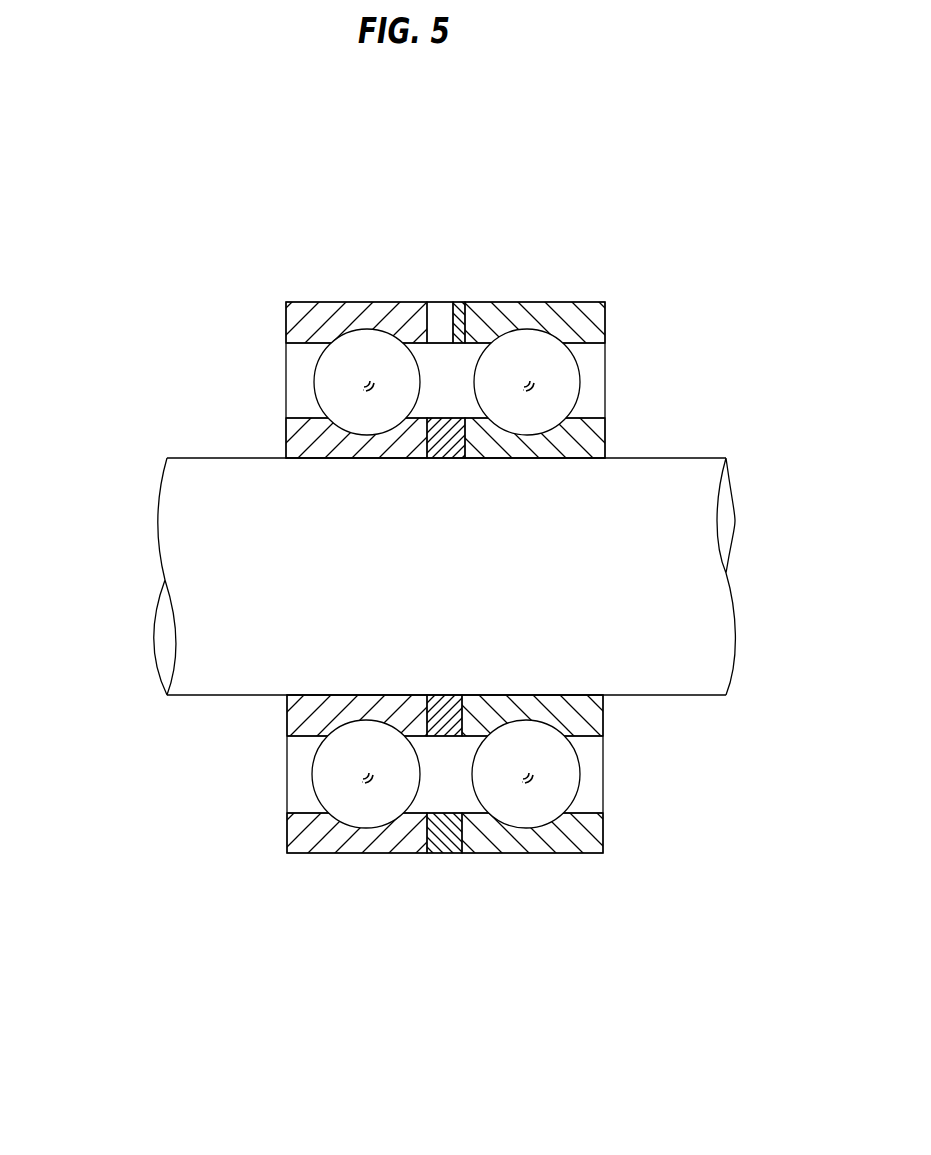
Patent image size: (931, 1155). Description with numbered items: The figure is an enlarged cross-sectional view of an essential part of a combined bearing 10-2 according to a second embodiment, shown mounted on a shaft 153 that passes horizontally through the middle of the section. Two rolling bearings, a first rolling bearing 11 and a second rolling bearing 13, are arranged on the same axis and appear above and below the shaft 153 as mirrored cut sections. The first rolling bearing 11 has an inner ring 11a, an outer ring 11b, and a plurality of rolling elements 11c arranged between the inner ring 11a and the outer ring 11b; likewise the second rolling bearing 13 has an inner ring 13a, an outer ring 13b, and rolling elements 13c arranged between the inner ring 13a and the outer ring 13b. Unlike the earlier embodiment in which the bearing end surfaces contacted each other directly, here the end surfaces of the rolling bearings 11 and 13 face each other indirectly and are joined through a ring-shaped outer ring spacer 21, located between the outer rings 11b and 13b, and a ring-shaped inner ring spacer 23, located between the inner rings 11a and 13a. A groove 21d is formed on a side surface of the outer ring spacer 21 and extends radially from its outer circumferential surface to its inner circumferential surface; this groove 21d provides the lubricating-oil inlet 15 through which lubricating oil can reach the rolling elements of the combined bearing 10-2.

The combined bearing 10-2 is at (447, 572).
The shaft 153 is at (190, 459).
The first rolling bearing 11 is at (342, 855).
The inner ring 11a is at (297, 719).
The outer ring 11b is at (297, 837).
The rolling elements 11c is at (332, 778).
The second rolling bearing 13 is at (553, 855).
The inner ring 13a is at (595, 718).
The outer ring 13b is at (598, 837).
The rolling elements 13c is at (560, 778).
The lubricating-oil inlet 15 is at (437, 301).
The outer ring spacer 21 is at (463, 591).
The groove 21d is at (446, 301).
The inner ring spacer 23 is at (445, 737).